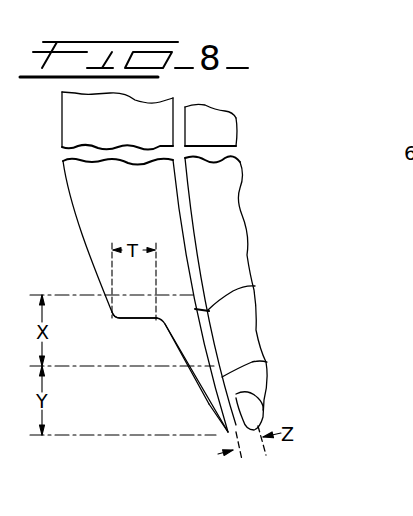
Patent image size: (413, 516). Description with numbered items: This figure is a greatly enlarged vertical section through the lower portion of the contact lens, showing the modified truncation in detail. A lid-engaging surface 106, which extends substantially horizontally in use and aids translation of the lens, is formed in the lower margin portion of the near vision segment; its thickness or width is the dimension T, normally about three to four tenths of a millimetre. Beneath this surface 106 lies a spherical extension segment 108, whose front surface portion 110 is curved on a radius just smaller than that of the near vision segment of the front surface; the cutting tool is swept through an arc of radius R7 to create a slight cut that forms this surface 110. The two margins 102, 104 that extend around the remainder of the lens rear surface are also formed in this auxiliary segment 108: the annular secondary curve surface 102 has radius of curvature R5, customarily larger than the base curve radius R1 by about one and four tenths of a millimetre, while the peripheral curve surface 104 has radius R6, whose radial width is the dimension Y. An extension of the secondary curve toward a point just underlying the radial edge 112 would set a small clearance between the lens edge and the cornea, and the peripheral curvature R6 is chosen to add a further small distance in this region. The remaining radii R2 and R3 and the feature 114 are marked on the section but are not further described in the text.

The margin 102 is at (254, 286).
The margin 104 is at (267, 362).
The lid-engaging surface 106 is at (132, 319).
The spherical extension segment 108 is at (169, 375).
The front surface portion 110 is at (209, 404).
The radial edge 112 is at (226, 436).
The heel portion 114 is at (262, 403).
The base curve radius R1 is at (178, 215).
The radius R2 is at (68, 117).
The radius R3 is at (102, 284).
The secondary curve radius R5 is at (211, 320).
The peripheral curve radius R6 is at (238, 392).
The cutting arc radius R7 is at (184, 361).